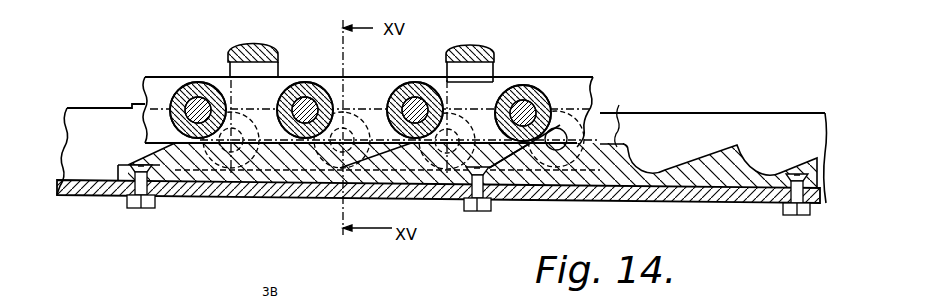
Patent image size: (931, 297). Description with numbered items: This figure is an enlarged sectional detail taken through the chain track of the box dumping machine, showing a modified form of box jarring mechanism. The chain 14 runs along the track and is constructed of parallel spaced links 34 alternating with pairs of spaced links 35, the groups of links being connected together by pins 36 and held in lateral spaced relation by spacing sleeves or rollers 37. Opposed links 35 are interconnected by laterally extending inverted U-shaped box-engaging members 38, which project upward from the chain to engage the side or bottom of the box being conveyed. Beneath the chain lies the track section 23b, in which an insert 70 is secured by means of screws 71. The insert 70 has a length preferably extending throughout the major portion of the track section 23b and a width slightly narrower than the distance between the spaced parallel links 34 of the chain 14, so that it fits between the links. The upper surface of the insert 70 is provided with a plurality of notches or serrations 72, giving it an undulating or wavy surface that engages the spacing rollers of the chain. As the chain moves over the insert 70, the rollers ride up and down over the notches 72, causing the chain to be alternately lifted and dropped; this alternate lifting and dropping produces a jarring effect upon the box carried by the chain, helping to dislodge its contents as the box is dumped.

The chain 14 is at (158, 74).
The track section 23b is at (222, 200).
The parallel spaced links 34 is at (363, 77).
The pairs of spaced links 35 is at (473, 93).
The pins 36 is at (284, 100).
The spacing sleeves or rollers 37 is at (190, 82).
The inverted U-shaped box-engaging members 38 is at (250, 51).
The insert 70 is at (733, 169).
The screws 71 is at (140, 210).
The notches or serrations 72 is at (288, 202).